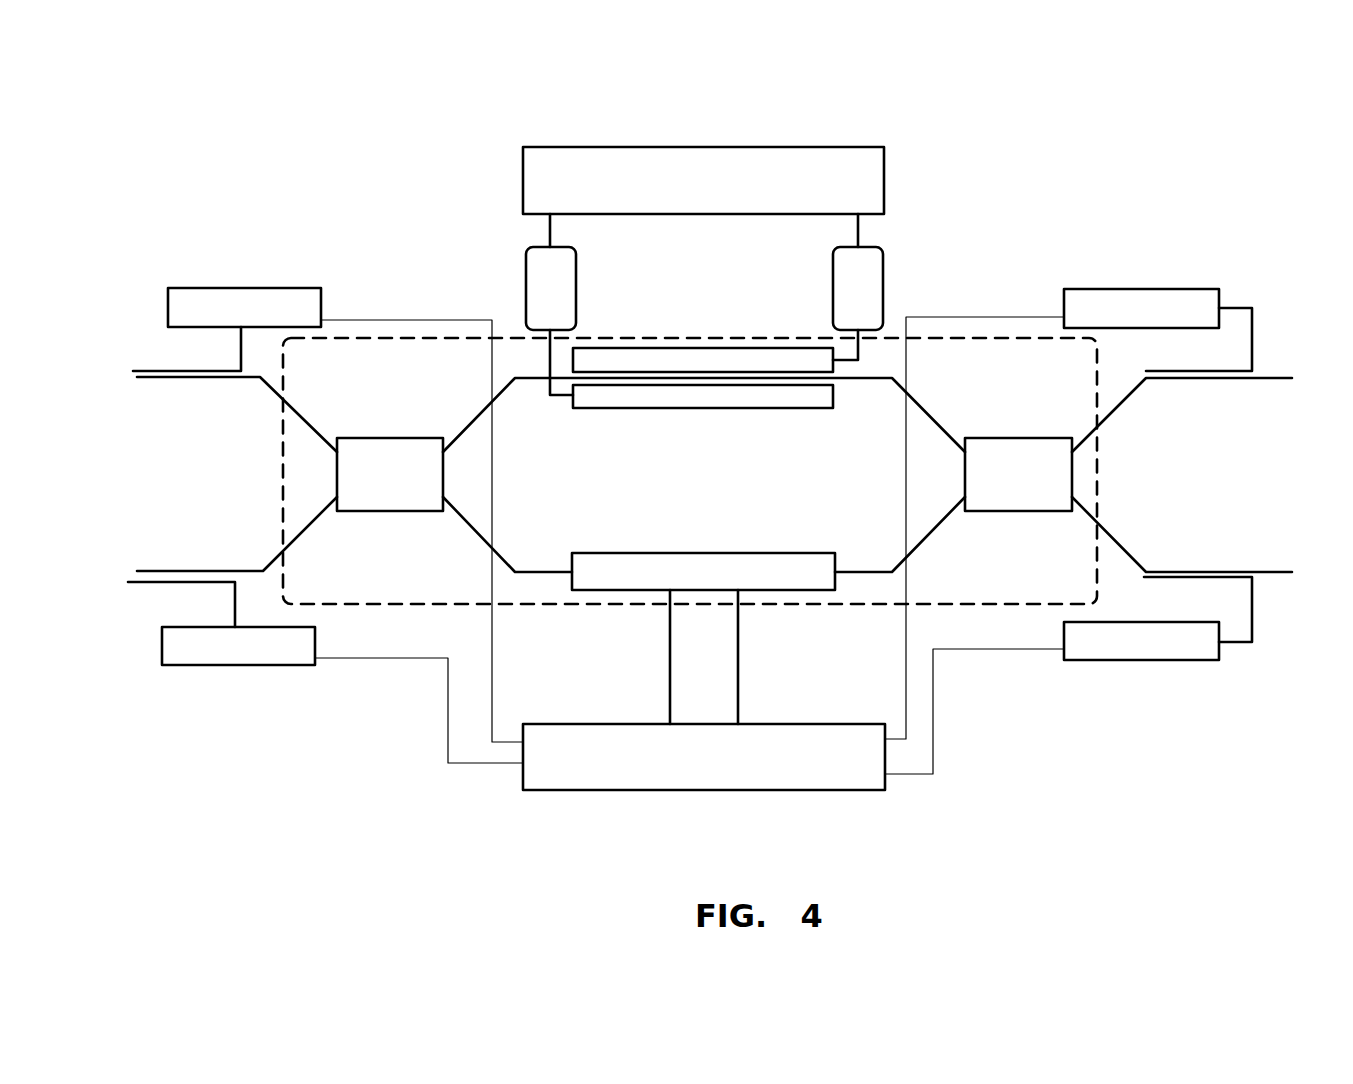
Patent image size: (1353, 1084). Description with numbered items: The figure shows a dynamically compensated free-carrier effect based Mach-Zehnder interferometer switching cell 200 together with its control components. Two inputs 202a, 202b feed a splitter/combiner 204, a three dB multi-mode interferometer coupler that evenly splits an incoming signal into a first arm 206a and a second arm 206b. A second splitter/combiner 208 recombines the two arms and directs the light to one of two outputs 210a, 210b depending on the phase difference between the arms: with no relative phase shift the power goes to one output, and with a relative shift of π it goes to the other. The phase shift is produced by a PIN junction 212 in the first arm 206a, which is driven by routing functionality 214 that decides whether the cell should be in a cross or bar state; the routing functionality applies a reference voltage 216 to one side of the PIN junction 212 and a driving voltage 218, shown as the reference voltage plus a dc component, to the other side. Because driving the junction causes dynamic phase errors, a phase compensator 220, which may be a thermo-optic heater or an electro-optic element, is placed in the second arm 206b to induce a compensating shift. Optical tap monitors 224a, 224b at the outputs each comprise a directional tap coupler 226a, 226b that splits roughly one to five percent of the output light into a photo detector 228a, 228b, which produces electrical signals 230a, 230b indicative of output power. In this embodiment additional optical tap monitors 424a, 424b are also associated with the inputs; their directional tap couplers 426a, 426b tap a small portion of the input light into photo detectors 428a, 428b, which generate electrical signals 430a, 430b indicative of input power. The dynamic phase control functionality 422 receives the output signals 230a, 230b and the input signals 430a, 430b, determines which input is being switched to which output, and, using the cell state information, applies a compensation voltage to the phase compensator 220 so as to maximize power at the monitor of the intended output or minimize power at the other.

The switching cell 200 is at (398, 338).
The input 202a is at (198, 379).
The input 202b is at (207, 571).
The splitter/combiner 204 is at (395, 438).
The first arm 206a is at (528, 380).
The second arm 206b is at (547, 572).
The second splitter/combiner 208 is at (1020, 438).
The output 210a is at (1265, 380).
The output 210b is at (1277, 572).
The PIN junction 212 is at (702, 326).
The routing functionality 214 is at (556, 147).
The reference voltage 216 is at (577, 287).
The driving voltage 218 is at (833, 286).
The phase compensator 220 is at (705, 553).
The optical tap monitor 224a is at (1190, 279).
The optical tap monitor 224b is at (1189, 671).
The directional tap coupler 226a is at (1255, 320).
The directional tap coupler 226b is at (1254, 645).
The photo detector 228a is at (1142, 289).
The photo detector 228b is at (1145, 661).
The electrical signal 230a is at (968, 317).
The electrical signal 230b is at (990, 650).
The dynamic phase control functionality 422 is at (698, 792).
The additional optical tap monitor 424a is at (226, 278).
The additional optical tap monitor 424b is at (245, 673).
The directional tap coupler 426a is at (138, 371).
The directional tap coupler 426b is at (137, 582).
The photo detector 428a is at (264, 288).
The photo detector 428b is at (303, 666).
The electrical signal 430a is at (442, 318).
The electrical signal 430b is at (452, 766).